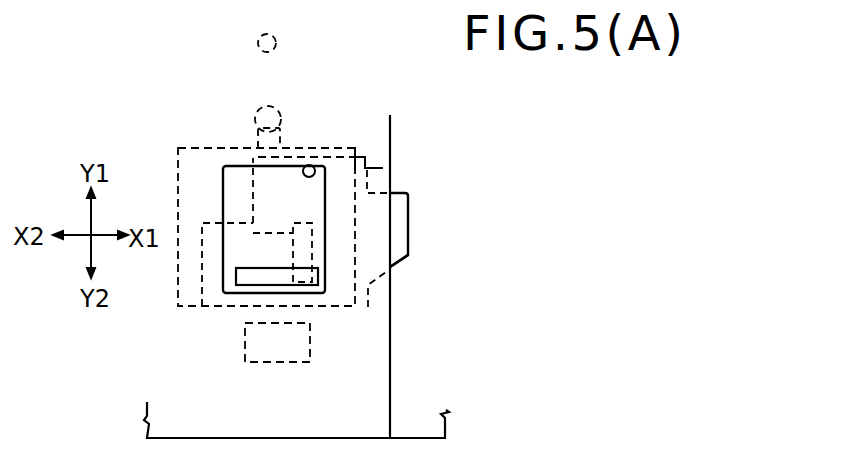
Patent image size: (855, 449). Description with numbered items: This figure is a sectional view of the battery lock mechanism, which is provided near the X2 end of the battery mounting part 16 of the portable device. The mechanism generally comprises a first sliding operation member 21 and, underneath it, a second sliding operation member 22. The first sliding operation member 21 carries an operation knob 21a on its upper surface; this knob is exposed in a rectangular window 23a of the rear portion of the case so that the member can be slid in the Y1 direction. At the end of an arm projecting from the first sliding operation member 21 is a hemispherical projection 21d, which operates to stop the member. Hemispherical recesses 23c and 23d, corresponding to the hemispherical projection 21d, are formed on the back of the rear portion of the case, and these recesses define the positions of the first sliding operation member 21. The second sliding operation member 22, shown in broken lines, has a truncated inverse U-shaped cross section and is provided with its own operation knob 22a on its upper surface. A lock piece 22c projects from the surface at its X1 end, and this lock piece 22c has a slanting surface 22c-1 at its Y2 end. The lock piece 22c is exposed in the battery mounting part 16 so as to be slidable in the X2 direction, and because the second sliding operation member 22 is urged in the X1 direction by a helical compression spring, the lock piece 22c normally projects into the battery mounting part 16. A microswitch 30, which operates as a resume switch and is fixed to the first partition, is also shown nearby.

The battery mounting part 16 is at (448, 413).
The first sliding operation member 21 is at (180, 196).
The operation knob 21a is at (247, 280).
The hemispherical projection 21d is at (268, 104).
The second sliding operation member 22 is at (383, 165).
The operation knob 22a is at (257, 232).
The lock piece 22c is at (408, 217).
The slanting surface 22c-1 is at (396, 264).
The rectangular window 23a is at (308, 165).
The hemispherical recess 23c is at (250, 108).
The hemispherical recess 23d is at (278, 38).
The microswitch 30 is at (310, 337).